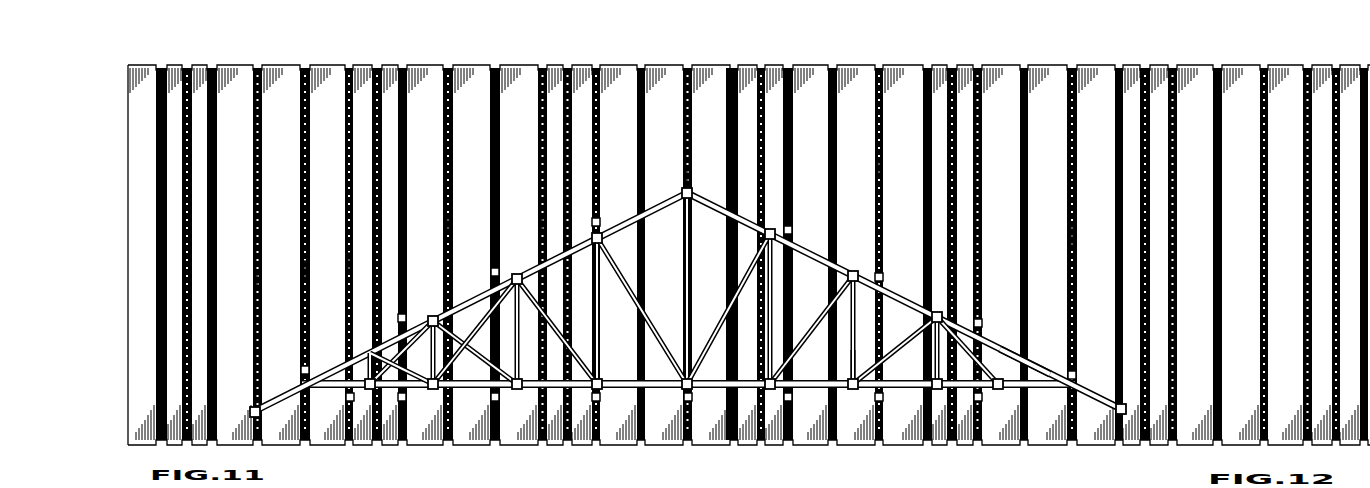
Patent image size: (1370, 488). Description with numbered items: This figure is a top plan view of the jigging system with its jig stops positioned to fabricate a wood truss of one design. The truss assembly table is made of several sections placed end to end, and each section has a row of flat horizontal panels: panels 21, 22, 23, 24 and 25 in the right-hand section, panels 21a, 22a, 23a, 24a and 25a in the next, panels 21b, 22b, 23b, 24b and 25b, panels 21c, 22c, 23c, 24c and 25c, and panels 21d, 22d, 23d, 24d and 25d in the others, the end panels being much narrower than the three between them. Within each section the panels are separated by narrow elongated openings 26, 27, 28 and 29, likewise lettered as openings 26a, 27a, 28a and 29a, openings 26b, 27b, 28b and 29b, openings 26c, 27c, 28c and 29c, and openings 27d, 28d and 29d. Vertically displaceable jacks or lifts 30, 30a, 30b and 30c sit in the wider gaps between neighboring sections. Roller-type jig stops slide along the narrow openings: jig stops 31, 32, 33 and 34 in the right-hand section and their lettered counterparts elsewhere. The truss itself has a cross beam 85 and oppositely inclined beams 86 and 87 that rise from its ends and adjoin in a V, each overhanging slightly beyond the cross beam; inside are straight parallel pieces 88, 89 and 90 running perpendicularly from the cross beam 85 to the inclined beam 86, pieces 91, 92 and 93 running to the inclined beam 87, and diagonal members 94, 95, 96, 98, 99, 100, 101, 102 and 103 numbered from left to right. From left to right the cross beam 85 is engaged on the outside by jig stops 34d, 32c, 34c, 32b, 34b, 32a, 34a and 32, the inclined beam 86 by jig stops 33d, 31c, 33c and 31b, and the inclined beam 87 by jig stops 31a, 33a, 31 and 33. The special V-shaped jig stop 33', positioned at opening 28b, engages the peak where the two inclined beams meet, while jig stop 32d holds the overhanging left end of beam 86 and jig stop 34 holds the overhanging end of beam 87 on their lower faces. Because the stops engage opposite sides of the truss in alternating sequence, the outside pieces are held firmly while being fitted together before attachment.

The flat horizontal panel 21 is at (966, 67).
The flat horizontal panel 21a is at (790, 446).
The flat horizontal panel 21b is at (582, 67).
The flat horizontal panel 21c is at (387, 446).
The flat horizontal panel 21d is at (205, 66).
The flat horizontal panel 22 is at (1009, 119).
The flat horizontal panel 22a is at (826, 171).
The flat horizontal panel 22b is at (630, 106).
The flat horizontal panel 22c is at (441, 136).
The flat horizontal panel 22d is at (245, 113).
The flat horizontal panel 23 is at (1057, 119).
The flat horizontal panel 23a is at (869, 186).
The flat horizontal panel 23b is at (677, 106).
The flat horizontal panel 23c is at (486, 153).
The flat horizontal panel 23d is at (289, 113).
The flat horizontal panel 24 is at (1102, 119).
The flat horizontal panel 24a is at (916, 189).
The flat horizontal panel 24b is at (722, 106).
The flat horizontal panel 24c is at (531, 166).
The flat horizontal panel 24d is at (337, 113).
The flat horizontal panel 25 is at (1122, 67).
The flat horizontal panel 25a is at (950, 446).
The flat horizontal panel 25b is at (736, 67).
The flat horizontal panel 25c is at (546, 446).
The flat horizontal panel 25d is at (347, 67).
The elongated opening 26 is at (1024, 172).
The elongated opening 26a is at (832, 122).
The elongated opening 26b is at (640, 150).
The elongated opening 26c is at (448, 215).
The elongated opening 27 is at (1024, 227).
The elongated opening 27a is at (832, 158).
The elongated opening 27b is at (640, 180).
The elongated opening 27c is at (450, 67).
The elongated opening 27d is at (257, 272).
The elongated opening 28 is at (1072, 227).
The elongated opening 28a is at (879, 158).
The elongated opening 28b is at (688, 168).
The elongated opening 28c is at (495, 215).
The elongated opening 28d is at (305, 260).
The elongated opening 29 is at (1119, 227).
The elongated opening 29a is at (927, 158).
The elongated opening 29b is at (735, 150).
The elongated opening 29c is at (542, 215).
The elongated opening 29d is at (349, 252).
The jack or lift 30 is at (955, 67).
The jack or lift 30a is at (764, 67).
The jack or lift 30b is at (540, 67).
The jack or lift 30c is at (378, 67).
The jig stop 31 is at (980, 319).
The jig stop 31a is at (789, 226).
The jig stop 31b is at (597, 218).
The jig stop 31c is at (405, 314).
The jig stop 32 is at (1000, 401).
The jig stop 32a is at (810, 401).
The jig stop 32b is at (618, 401).
The jig stop 32c is at (425, 401).
The jig stop 32d is at (259, 415).
The jig stop 33 is at (1084, 359).
The special jig stop 33' is at (700, 175).
The jig stop 33a is at (883, 274).
The jig stop 33c is at (491, 272).
The jig stop 33d is at (301, 368).
The jig stop 34 is at (1118, 413).
The jig stop 34a is at (900, 399).
The jig stop 34b is at (710, 399).
The jig stop 34c is at (520, 399).
The jig stop 34d is at (347, 398).
The cross beam 85 is at (612, 380).
The inclined beam 86 is at (530, 266).
The inclined beam 87 is at (853, 272).
The straight parallel piece 88 is at (431, 358).
The straight parallel piece 89 is at (487, 310).
The straight parallel piece 90 is at (597, 300).
The straight parallel piece 91 is at (782, 284).
The straight parallel piece 92 is at (825, 355).
The straight parallel piece 93 is at (933, 362).
The diagonal member 94 is at (360, 343).
The diagonal member 95 is at (368, 318).
The diagonal member 96 is at (486, 359).
The diagonal member 98 is at (650, 322).
The diagonal member 99 is at (724, 322).
The diagonal member 100 is at (797, 350).
The diagonal member 101 is at (908, 340).
The diagonal member 102 is at (983, 366).
The diagonal member 103 is at (1022, 338).